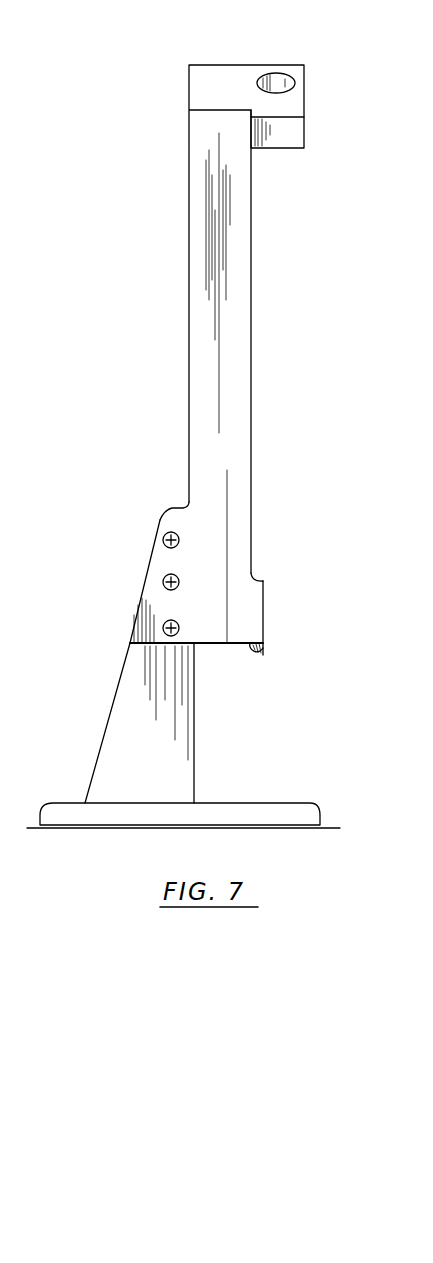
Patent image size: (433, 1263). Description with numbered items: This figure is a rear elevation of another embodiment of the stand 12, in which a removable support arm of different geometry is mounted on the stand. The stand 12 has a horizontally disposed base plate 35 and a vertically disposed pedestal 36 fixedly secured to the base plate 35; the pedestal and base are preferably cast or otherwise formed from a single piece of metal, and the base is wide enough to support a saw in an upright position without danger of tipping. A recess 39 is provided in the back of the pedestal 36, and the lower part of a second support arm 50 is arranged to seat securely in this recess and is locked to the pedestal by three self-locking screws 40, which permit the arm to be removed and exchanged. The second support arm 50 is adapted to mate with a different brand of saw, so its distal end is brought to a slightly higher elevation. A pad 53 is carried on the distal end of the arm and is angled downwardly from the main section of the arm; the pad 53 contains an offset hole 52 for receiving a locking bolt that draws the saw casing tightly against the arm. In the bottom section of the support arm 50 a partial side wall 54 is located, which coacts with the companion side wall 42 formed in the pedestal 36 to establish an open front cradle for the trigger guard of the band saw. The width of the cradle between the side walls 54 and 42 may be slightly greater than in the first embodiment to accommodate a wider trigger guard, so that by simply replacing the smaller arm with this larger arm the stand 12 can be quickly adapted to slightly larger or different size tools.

The stand 12 is at (122, 609).
The base plate 35 is at (271, 804).
The pedestal 36 is at (201, 746).
The recess 39 is at (165, 648).
The self-locking screws 40 is at (179, 628).
The side wall 42 is at (147, 575).
The second support arm 50 is at (254, 304).
The offset hole 52 is at (293, 75).
The pad 53 is at (293, 135).
The partial side wall 54 is at (265, 648).